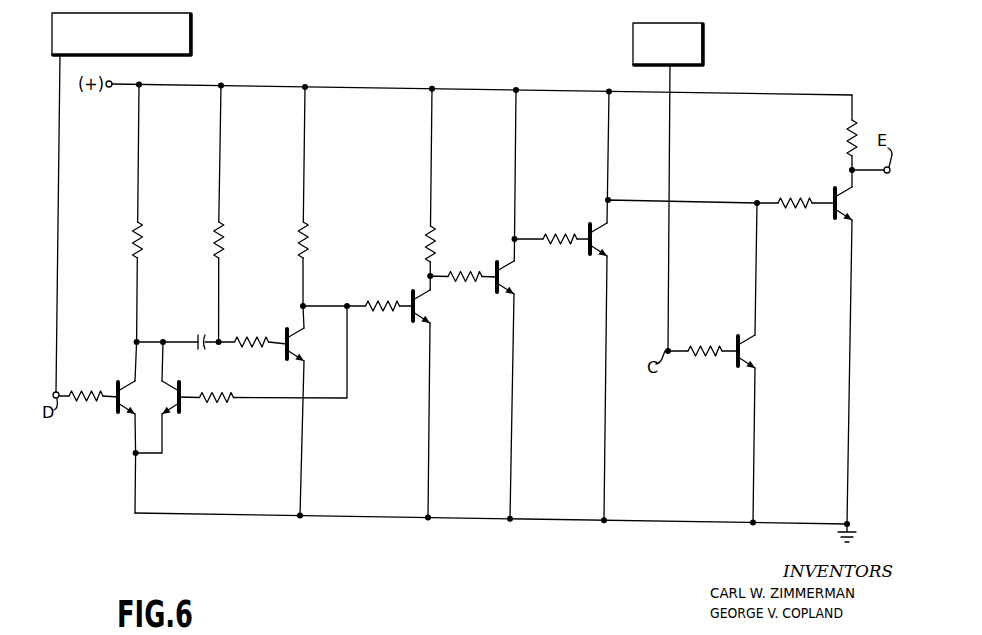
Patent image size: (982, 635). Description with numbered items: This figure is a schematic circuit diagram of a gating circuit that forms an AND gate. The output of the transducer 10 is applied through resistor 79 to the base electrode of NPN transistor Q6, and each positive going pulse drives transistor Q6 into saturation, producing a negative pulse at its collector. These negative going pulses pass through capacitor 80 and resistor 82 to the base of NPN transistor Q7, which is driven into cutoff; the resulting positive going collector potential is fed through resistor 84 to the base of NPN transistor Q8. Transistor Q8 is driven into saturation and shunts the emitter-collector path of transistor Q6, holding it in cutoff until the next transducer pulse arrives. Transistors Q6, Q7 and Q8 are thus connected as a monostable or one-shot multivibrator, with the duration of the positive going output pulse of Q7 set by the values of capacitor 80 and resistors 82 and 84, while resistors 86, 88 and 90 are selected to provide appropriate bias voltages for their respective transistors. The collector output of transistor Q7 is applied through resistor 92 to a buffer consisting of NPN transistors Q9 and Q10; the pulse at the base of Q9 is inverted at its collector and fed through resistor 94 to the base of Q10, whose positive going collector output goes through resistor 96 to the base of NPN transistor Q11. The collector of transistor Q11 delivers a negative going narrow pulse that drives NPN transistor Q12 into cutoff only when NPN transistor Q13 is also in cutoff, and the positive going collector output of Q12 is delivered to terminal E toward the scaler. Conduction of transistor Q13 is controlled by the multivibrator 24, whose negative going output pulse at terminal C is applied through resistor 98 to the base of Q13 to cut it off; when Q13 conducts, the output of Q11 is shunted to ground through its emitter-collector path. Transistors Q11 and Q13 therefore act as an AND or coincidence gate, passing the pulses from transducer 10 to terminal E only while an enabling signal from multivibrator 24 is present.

The transducer 10 is at (190, 45).
The multivibrator 24 is at (702, 57).
The resistor 79 is at (91, 385).
The capacitor 80 is at (204, 333).
The resistor 82 is at (268, 333).
The resistor 84 is at (232, 400).
The resistor 86 is at (132, 242).
The resistor 88 is at (213, 242).
The resistor 90 is at (298, 242).
The resistor 92 is at (394, 302).
The resistor 94 is at (479, 268).
The resistor 96 is at (570, 231).
The resistor 98 is at (715, 337).
The NPN transistor Q6 is at (130, 382).
The NPN transistor Q7 is at (296, 346).
The NPN transistor Q8 is at (168, 380).
The NPN transistor Q9 is at (420, 307).
The NPN transistor Q10 is at (506, 278).
The NPN transistor Q11 is at (598, 239).
The NPN transistor Q12 is at (845, 208).
The NPN transistor Q13 is at (748, 352).